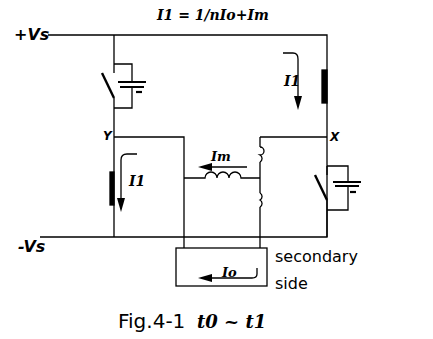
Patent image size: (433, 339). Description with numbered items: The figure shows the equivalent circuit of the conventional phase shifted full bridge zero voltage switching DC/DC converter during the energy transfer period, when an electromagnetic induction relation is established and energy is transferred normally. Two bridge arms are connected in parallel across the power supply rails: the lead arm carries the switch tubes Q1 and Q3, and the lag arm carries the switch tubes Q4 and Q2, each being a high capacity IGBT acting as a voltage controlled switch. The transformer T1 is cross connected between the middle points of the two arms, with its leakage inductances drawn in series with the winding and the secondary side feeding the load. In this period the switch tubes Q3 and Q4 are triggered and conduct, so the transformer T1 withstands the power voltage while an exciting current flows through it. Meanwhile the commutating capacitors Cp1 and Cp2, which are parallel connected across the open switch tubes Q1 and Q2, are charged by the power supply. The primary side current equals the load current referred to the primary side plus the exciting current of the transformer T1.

The switch tube Q1 is at (102, 85).
The switch tube Q2 is at (313, 201).
The switch tube Q3 is at (102, 188).
The switch tube Q4 is at (316, 86).
The commutating capacitor Cp1 is at (139, 86).
The commutating capacitor Cp2 is at (353, 188).
The transformer T1 is at (222, 188).